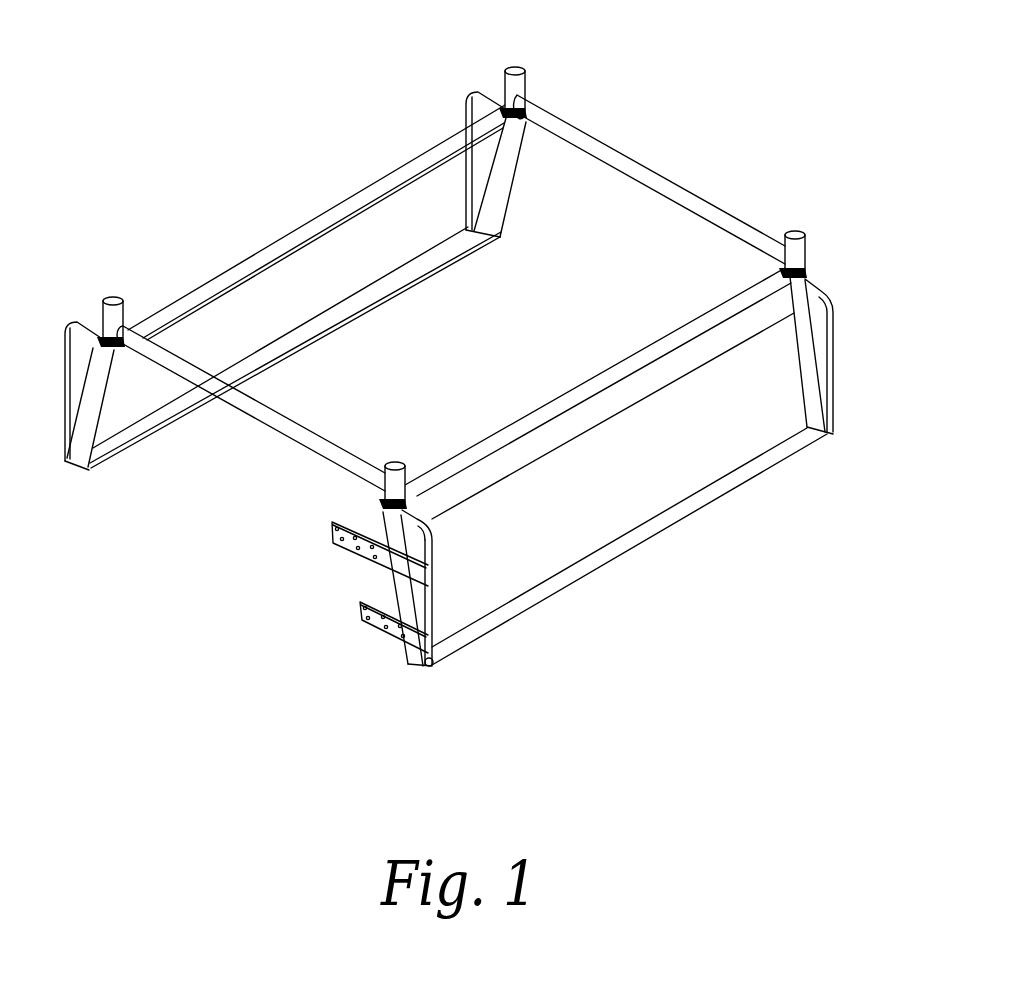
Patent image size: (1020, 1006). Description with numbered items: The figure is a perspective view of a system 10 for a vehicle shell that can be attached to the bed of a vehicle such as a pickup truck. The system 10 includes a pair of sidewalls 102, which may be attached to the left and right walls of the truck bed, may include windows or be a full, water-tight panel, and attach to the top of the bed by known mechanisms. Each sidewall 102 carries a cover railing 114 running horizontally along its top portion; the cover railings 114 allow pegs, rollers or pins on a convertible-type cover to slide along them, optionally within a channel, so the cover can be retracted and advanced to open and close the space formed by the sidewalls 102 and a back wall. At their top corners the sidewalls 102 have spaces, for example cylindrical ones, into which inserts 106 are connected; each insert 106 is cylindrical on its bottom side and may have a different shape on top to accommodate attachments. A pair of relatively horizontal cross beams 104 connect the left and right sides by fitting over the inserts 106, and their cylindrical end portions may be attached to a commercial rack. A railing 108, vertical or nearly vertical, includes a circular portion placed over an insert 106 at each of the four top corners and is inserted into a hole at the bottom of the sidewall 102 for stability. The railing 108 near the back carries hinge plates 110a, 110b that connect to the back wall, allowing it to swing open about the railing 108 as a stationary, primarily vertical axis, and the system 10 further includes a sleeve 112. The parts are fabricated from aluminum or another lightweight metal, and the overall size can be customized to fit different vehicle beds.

The system 10 is at (186, 88).
The sidewall 102 is at (283, 233).
The cross beam 104 is at (626, 150).
The insert 106 is at (502, 118).
The railing 108 is at (480, 93).
The hinge plate 110a is at (393, 560).
The hinge plate 110b is at (407, 641).
The sleeve 112 is at (437, 622).
The cover railing 114 is at (177, 296).